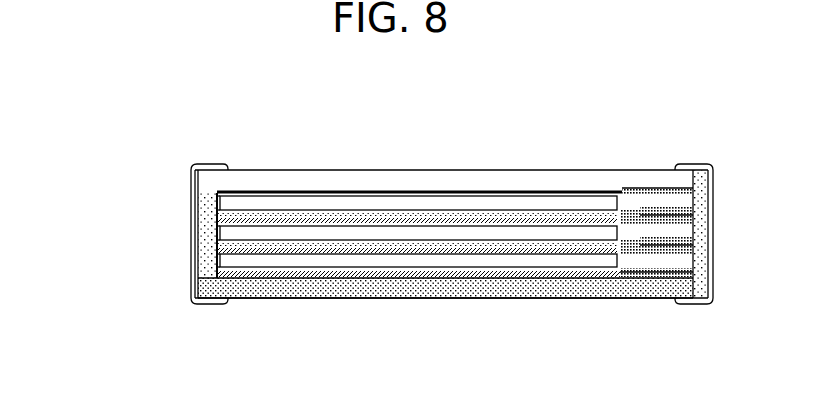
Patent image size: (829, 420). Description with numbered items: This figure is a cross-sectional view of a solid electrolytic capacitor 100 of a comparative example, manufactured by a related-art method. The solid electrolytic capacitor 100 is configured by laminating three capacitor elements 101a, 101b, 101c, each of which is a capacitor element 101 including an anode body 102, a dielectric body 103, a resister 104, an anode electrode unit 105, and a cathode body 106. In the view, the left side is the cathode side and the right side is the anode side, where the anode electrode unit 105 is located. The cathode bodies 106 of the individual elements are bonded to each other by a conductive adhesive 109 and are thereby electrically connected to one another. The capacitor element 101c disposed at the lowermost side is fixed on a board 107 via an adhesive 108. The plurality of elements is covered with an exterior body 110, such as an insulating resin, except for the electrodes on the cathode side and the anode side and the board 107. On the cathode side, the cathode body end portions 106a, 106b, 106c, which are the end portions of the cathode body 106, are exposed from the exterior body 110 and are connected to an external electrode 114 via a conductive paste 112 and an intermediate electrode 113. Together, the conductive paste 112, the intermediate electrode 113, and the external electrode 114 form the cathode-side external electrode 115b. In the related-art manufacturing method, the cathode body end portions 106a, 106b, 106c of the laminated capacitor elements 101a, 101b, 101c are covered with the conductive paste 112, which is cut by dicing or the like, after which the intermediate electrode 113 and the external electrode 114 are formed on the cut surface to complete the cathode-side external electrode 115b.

The solid electrolytic capacitor 100 is at (490, 376).
The capacitor element 101 is at (705, 100).
The capacitor element 101a is at (687, 202).
The capacitor element 101b is at (687, 230).
The capacitor element 101c is at (687, 260).
The anode body 102 is at (574, 203).
The dielectric body 103 is at (457, 191).
The resister 104 is at (628, 189).
The anode electrode unit 105 is at (677, 192).
The cathode body 106 is at (515, 191).
The cathode body end portion 106a is at (218, 199).
The cathode body end portion 106b is at (218, 233).
The cathode body end portion 106c is at (218, 261).
The board 107 is at (562, 287).
The adhesive 108 is at (400, 277).
The conductive adhesive 109 is at (351, 247).
The exterior body 110 is at (333, 180).
The conductive paste 112 is at (207, 204).
The intermediate electrode 113 is at (194, 222).
The external electrode 114 is at (191, 236).
The cathode-side external electrode 115b is at (125, 234).